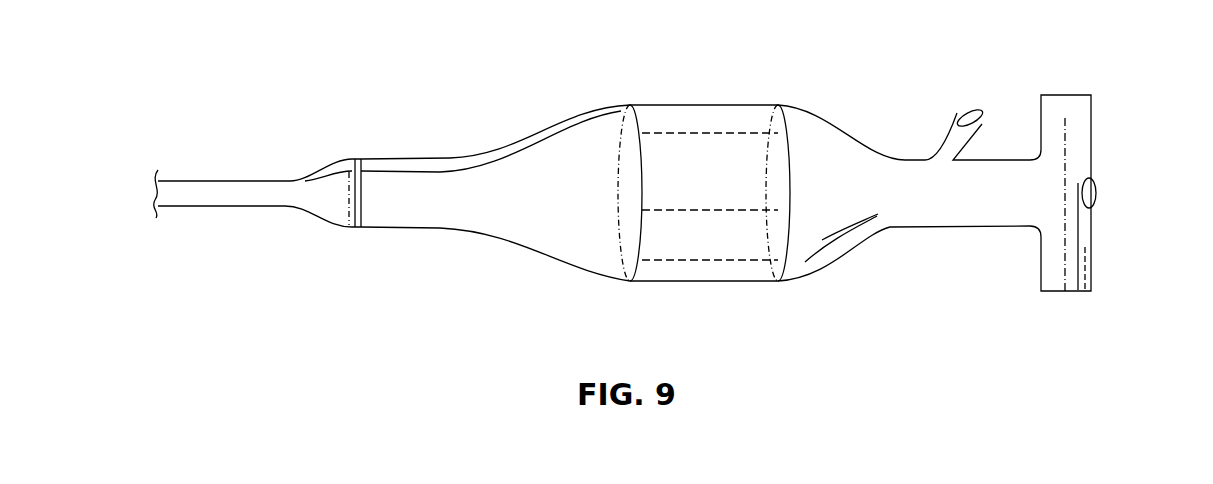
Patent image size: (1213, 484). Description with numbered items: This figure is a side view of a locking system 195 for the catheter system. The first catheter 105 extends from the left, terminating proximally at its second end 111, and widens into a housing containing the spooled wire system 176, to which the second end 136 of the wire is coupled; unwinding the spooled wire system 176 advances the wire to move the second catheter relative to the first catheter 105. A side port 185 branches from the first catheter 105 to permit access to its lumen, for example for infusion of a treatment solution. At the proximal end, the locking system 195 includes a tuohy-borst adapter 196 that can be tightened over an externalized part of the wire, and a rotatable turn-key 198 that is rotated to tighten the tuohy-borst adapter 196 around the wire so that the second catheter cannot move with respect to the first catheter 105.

The first catheter 105 is at (213, 207).
The second end 111 is at (322, 235).
The second end 136 is at (622, 105).
The spooled wire system 176 is at (622, 221).
The side port 185 is at (972, 110).
The locking system 195 is at (998, 265).
The tuohy-borst adapter 196 is at (1097, 195).
The turn-key 198 is at (1065, 291).